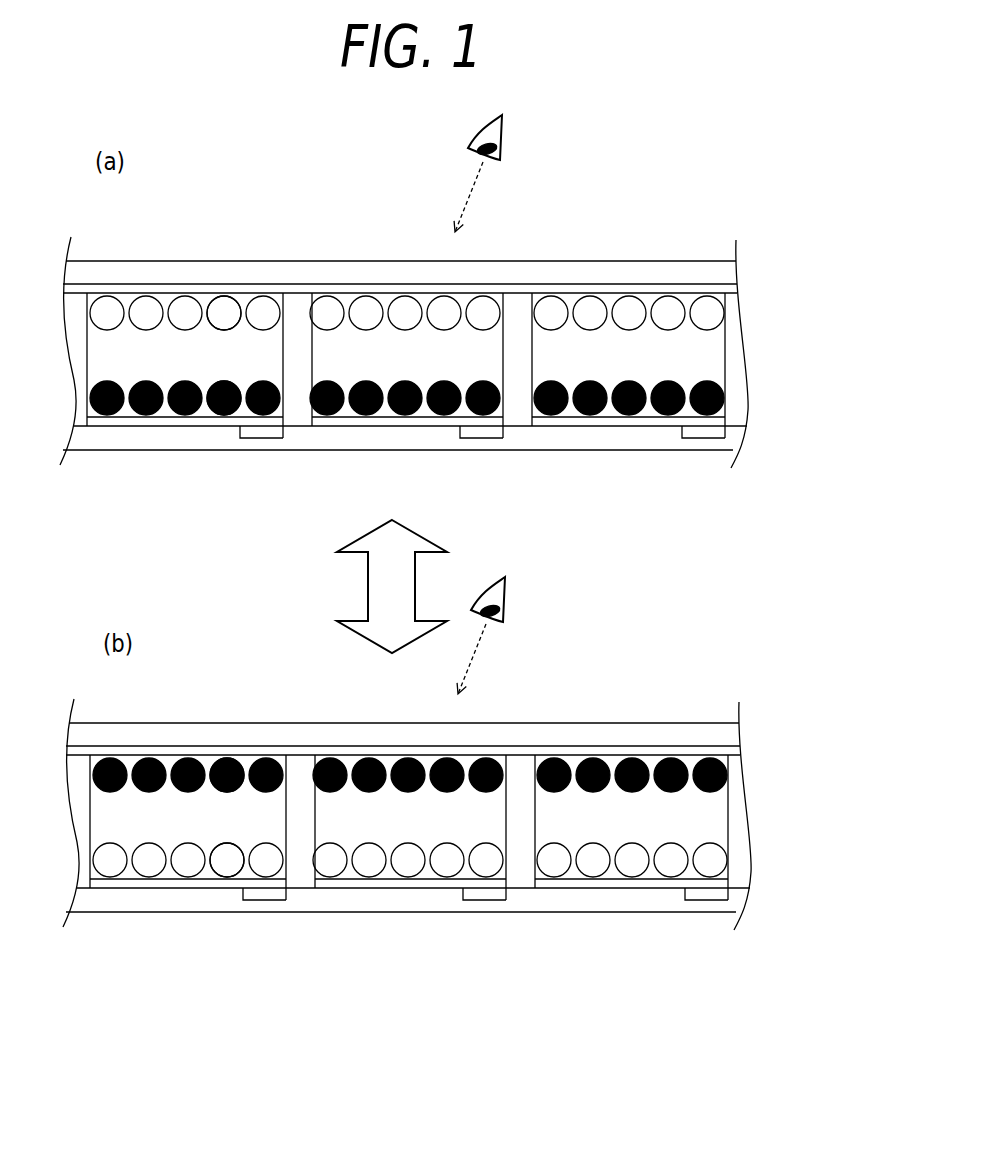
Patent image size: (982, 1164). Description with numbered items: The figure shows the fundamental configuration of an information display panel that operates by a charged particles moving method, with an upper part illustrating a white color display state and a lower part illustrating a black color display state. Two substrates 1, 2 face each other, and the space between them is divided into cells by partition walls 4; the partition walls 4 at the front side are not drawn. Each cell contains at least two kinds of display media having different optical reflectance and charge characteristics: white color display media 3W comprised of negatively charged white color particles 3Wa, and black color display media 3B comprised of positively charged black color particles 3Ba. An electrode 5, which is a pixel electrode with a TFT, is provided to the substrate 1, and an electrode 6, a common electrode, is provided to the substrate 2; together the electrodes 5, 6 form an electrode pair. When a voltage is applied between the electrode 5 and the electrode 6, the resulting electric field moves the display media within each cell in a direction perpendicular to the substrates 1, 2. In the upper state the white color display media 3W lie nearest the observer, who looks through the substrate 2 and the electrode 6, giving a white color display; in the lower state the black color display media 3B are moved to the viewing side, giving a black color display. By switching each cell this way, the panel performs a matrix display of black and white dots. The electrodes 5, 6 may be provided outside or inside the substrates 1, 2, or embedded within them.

The substrate 1 is at (686, 443).
The substrate 2 is at (690, 270).
The partition walls 4 is at (84, 413).
The electrode 5 is at (607, 422).
The electrode 6 is at (607, 290).
The white color display media 3W is at (772, 297).
The black color display media 3B is at (772, 381).
The white color particles 3Wa is at (223, 307).
The black color particles 3Ba is at (221, 415).
The element TFT is at (266, 431).